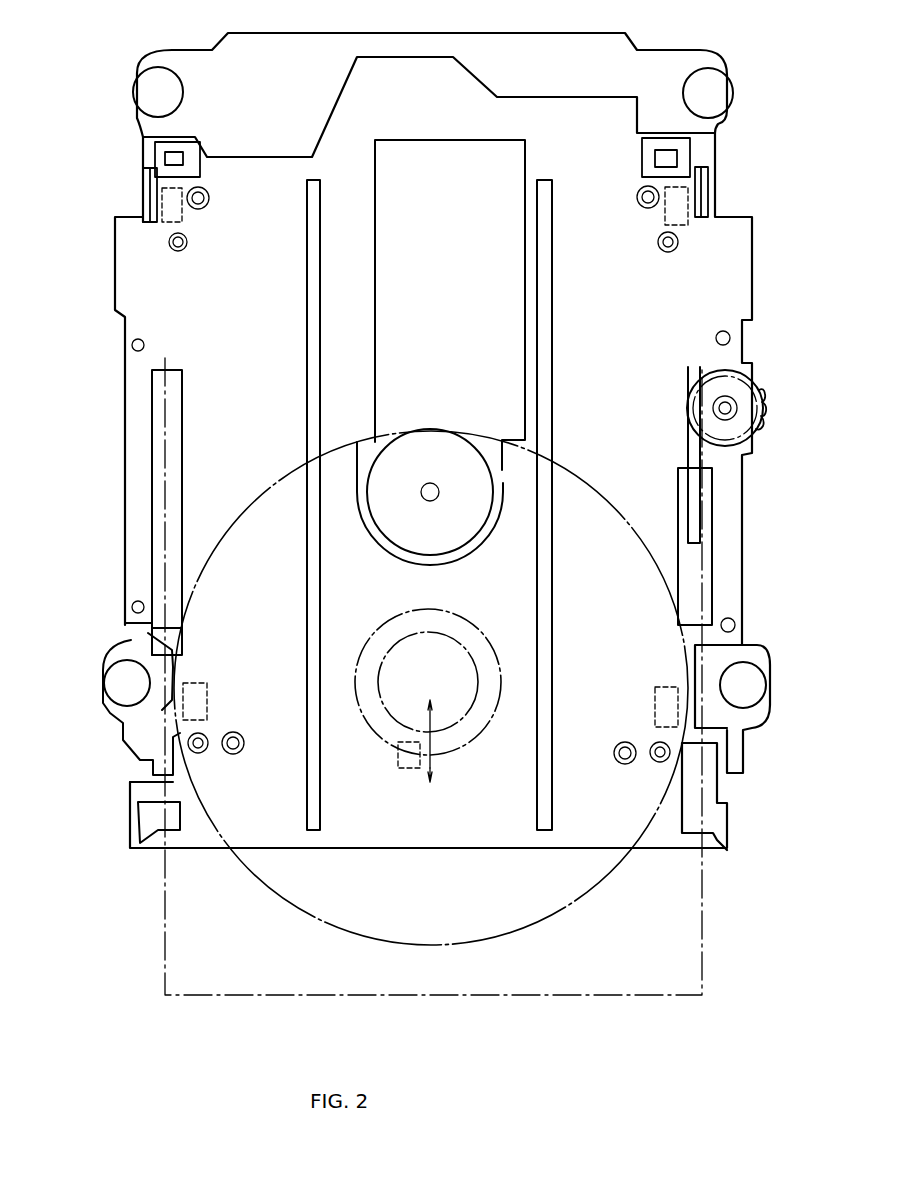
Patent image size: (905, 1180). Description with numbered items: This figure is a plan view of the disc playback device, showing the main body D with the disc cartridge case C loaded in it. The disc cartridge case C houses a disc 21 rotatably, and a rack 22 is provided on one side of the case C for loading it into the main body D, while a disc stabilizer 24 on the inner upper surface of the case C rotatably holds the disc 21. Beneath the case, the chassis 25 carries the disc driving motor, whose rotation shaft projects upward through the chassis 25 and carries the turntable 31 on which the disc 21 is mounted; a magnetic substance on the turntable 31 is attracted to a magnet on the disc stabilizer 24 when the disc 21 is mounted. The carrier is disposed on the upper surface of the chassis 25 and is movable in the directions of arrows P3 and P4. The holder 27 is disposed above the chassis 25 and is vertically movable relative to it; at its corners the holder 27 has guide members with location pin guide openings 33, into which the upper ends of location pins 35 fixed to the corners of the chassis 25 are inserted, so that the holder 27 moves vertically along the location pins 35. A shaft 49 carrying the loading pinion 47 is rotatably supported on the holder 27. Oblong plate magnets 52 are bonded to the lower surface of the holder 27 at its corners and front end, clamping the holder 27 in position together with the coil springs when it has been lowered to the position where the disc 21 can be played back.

The disc 21 is at (495, 942).
The rack 22 is at (700, 478).
The disc stabilizer 24 is at (478, 632).
The chassis 25 is at (580, 33).
The holder 27 is at (752, 290).
The turntable 31 is at (458, 443).
The location pin guide openings 33 is at (178, 251).
The location pins 35 is at (187, 242).
The loading pinion 47 is at (765, 410).
The shaft 49 is at (733, 404).
The magnets 52 is at (182, 218).
The disc cartridge case C is at (160, 937).
The main body D is at (115, 220).
The arrow P3 is at (426, 723).
The arrow P4 is at (442, 782).